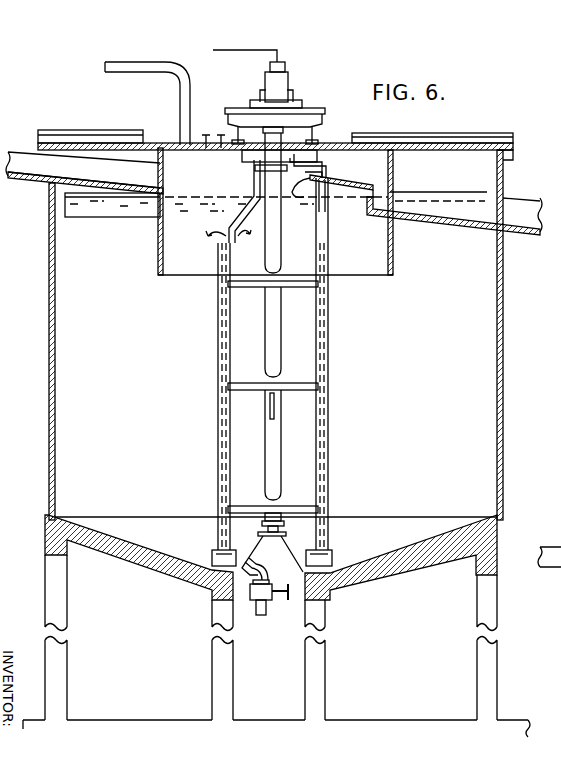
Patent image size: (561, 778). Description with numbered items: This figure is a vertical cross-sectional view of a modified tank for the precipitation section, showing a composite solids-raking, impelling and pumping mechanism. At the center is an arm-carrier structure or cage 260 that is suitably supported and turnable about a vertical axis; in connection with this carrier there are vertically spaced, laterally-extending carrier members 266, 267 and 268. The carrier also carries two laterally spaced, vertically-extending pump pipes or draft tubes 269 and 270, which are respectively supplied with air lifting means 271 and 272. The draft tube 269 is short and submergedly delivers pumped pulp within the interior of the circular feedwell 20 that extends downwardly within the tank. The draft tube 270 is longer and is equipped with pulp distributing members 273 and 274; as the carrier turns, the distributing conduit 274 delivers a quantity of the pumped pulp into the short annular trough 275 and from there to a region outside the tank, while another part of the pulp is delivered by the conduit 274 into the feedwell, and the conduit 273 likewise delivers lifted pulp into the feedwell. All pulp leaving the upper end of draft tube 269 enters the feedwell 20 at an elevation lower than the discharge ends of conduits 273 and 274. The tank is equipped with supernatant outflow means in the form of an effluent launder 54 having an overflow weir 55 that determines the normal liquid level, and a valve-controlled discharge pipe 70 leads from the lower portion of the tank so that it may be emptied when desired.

The feedwell 20 is at (160, 240).
The effluent launder 54 is at (61, 218).
The overflow weir 55 is at (91, 195).
The valve-controlled discharge pipe 70 is at (263, 602).
The arm-carrier structure 260 is at (276, 456).
The carrier member 266 is at (300, 503).
The carrier member 267 is at (305, 380).
The carrier member 268 is at (305, 287).
The draft tube 269 is at (218, 406).
The draft tube 270 is at (326, 410).
The air lifting means 271 is at (222, 458).
The air lifting means 272 is at (320, 442).
The distributing conduit 273 is at (298, 198).
The distributing conduit 274 is at (360, 178).
The annular trough 275 is at (378, 211).